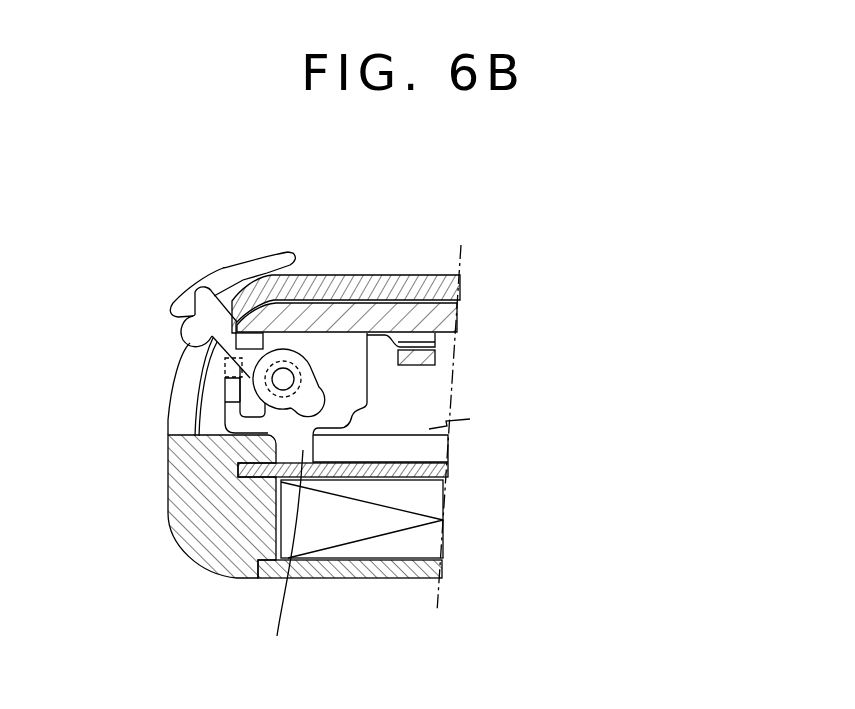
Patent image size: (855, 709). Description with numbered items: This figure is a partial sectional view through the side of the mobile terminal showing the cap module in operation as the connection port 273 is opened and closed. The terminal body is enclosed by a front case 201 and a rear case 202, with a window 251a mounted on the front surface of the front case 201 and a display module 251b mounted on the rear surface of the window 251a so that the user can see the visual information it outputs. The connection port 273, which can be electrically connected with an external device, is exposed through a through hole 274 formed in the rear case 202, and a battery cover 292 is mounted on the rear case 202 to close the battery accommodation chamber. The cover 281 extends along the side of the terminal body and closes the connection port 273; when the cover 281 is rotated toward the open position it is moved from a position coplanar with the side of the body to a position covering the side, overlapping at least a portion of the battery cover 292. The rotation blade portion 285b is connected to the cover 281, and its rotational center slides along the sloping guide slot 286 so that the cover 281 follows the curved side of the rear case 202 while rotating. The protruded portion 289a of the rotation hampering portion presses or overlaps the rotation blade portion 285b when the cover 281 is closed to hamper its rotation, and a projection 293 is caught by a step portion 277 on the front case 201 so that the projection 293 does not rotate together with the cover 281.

The cover 281 is at (219, 272).
The battery cover 292 is at (348, 285).
The rear case 202 is at (415, 316).
The rotation blade portion 285b is at (204, 335).
The through hole 274 is at (181, 386).
The guide slot 286 is at (312, 403).
The protruded portion 289a is at (233, 400).
The connection port 273 is at (405, 431).
The step portion 277 is at (263, 487).
The front case 201 is at (227, 550).
The projection 293 is at (282, 559).
The window 251a is at (336, 563).
The display module 251b is at (397, 545).